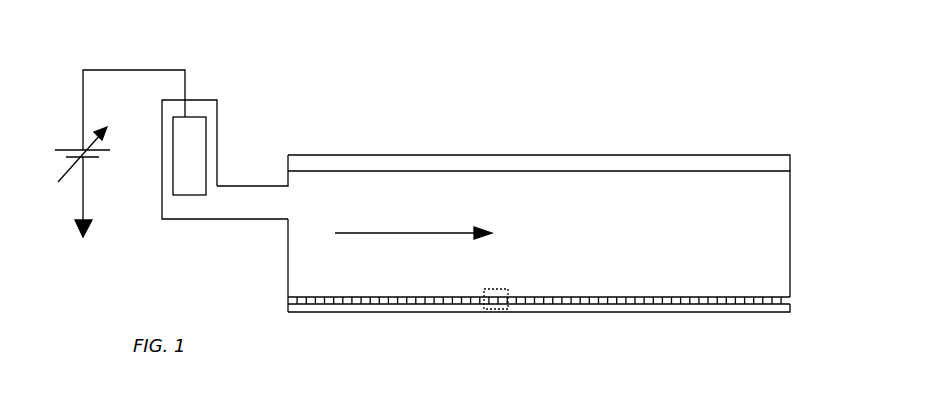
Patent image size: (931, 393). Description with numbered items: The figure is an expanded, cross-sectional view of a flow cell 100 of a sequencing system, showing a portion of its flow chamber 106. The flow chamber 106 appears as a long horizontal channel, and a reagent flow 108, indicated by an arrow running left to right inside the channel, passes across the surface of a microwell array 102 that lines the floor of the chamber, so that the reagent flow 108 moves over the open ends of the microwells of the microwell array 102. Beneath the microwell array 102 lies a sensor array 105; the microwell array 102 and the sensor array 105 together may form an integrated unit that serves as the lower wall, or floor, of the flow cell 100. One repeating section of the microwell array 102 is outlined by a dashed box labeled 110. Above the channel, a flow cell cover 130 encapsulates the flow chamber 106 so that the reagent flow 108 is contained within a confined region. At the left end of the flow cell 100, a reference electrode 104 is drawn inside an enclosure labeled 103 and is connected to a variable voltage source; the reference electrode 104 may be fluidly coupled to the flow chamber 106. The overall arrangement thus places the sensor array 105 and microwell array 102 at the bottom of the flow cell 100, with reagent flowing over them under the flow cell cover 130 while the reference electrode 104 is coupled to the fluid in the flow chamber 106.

The flow cell 100 is at (548, 43).
The microwell array 102 is at (728, 297).
The driver unit 103 is at (241, 207).
The reference electrode 104 is at (206, 140).
The sensor array 105 is at (680, 312).
The flow chamber 106 is at (622, 190).
The reagent flow 108 is at (382, 233).
The grating unit cell 110 is at (495, 309).
The flow cell cover 130 is at (755, 163).